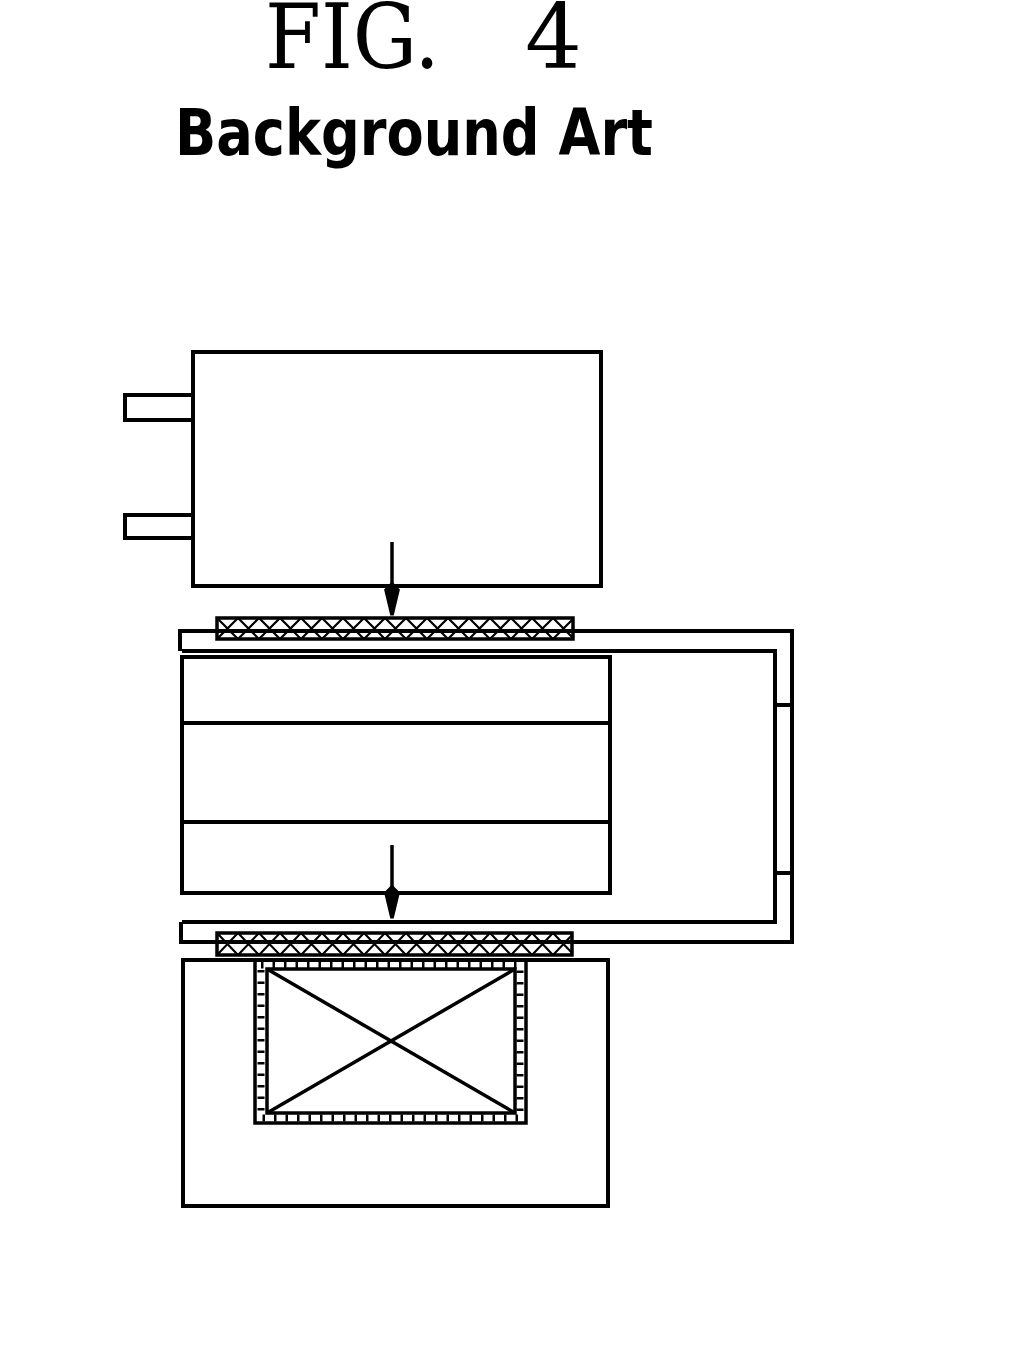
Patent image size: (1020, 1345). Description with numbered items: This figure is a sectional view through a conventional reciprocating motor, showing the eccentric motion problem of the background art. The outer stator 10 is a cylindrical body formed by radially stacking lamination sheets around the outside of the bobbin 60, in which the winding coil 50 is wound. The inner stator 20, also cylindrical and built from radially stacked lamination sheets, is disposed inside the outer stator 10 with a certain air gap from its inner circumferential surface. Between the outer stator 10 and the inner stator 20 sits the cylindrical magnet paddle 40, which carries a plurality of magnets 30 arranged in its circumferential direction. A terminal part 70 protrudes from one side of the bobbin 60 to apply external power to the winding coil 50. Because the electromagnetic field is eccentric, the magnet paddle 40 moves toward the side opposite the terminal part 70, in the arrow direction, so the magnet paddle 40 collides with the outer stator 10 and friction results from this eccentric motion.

The outer stator 10 is at (193, 1050).
The inner stator 20 is at (193, 860).
The magnets 30 is at (560, 618).
The magnet paddle 40 is at (697, 638).
The winding coil 50 is at (497, 1035).
The bobbin 60 is at (527, 1086).
The terminal part 70 is at (580, 432).